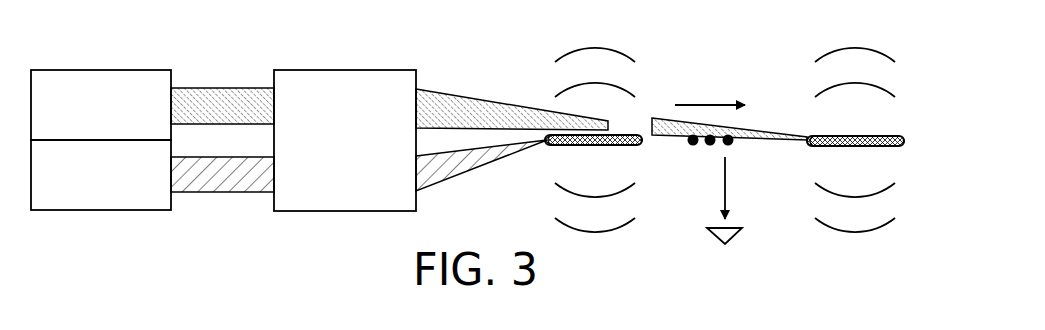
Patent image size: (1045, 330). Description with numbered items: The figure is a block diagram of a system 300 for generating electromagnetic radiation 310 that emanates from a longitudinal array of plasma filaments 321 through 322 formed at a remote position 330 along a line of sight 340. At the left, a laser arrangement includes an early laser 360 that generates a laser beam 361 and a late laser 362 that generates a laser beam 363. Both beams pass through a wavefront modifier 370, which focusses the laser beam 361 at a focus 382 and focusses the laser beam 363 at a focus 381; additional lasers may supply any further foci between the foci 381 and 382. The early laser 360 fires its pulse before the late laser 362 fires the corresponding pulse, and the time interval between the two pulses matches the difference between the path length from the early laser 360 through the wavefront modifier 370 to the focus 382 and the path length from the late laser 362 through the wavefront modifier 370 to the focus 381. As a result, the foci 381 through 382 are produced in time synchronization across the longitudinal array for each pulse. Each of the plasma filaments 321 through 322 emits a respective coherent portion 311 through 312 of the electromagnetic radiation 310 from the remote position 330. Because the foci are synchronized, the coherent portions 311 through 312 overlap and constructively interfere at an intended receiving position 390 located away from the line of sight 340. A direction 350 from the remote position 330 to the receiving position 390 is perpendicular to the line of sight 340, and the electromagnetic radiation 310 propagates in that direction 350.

The system 300 is at (63, 62).
The electromagnetic radiation 310 is at (559, 59).
The coherent portion 311 is at (633, 220).
The coherent portion 312 is at (893, 220).
The plasma filament 321 is at (596, 135).
The plasma filament 322 is at (856, 136).
The remote position 330 is at (498, 78).
The line of sight 340 is at (713, 105).
The direction 350 is at (723, 195).
The early laser 360 is at (153, 70).
The laser beam 361 is at (231, 88).
The late laser 362 is at (153, 210).
The laser beam 363 is at (231, 192).
The wavefront modifier 370 is at (293, 70).
The focus 381 is at (552, 136).
The focus 382 is at (812, 137).
The intended receiving position 390 is at (740, 230).